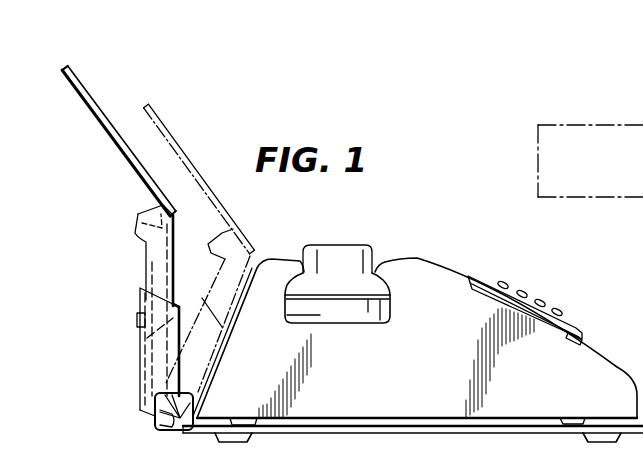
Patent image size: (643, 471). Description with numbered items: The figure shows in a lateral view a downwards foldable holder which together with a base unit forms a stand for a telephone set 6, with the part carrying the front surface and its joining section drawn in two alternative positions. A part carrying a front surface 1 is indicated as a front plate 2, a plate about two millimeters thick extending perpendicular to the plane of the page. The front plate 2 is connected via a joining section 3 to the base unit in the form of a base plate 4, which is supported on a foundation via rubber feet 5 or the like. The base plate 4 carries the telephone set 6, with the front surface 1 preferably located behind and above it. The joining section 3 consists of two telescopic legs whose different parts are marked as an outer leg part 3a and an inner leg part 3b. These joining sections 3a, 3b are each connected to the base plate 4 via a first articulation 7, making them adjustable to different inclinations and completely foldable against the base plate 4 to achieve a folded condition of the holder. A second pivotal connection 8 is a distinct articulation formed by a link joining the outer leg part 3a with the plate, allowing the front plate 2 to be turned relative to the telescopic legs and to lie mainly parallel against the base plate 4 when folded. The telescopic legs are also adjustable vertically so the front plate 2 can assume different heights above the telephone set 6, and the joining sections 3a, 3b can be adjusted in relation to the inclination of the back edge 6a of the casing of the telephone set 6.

The front surface 1 is at (108, 84).
The front plate 2 is at (98, 118).
The joining section 3 is at (112, 300).
The telescopic outer leg part 3a is at (148, 245).
The inner telescopic leg part 3b is at (158, 358).
The base plate 4 is at (312, 446).
The rubber feet 5 is at (244, 438).
The telephone set 6 is at (433, 290).
The back edge 6a is at (220, 337).
The first articulation 7 is at (160, 433).
The second pivotal connection 8 is at (125, 197).